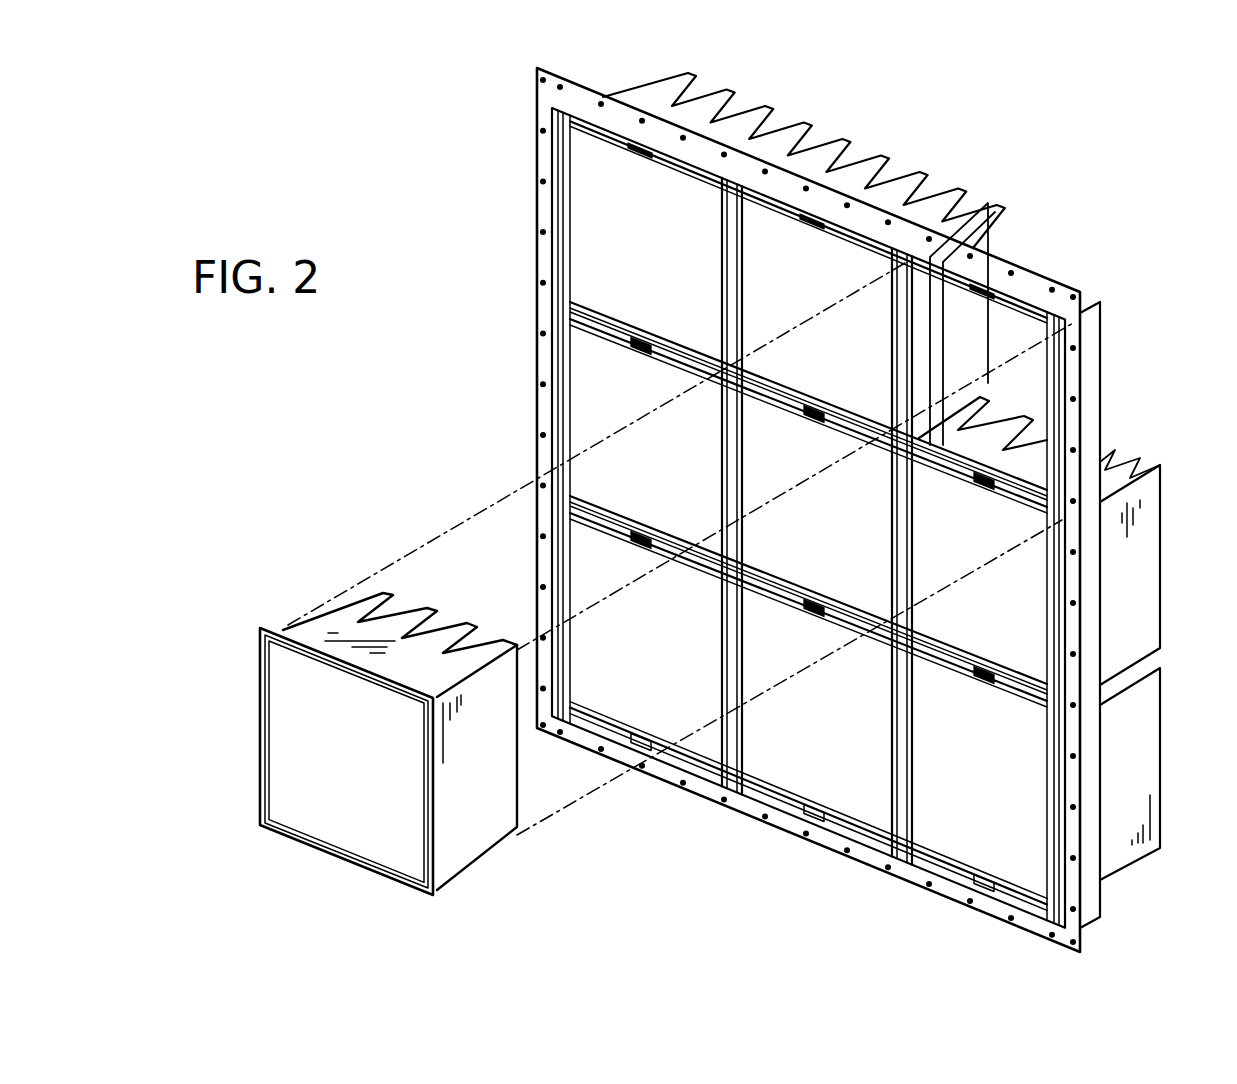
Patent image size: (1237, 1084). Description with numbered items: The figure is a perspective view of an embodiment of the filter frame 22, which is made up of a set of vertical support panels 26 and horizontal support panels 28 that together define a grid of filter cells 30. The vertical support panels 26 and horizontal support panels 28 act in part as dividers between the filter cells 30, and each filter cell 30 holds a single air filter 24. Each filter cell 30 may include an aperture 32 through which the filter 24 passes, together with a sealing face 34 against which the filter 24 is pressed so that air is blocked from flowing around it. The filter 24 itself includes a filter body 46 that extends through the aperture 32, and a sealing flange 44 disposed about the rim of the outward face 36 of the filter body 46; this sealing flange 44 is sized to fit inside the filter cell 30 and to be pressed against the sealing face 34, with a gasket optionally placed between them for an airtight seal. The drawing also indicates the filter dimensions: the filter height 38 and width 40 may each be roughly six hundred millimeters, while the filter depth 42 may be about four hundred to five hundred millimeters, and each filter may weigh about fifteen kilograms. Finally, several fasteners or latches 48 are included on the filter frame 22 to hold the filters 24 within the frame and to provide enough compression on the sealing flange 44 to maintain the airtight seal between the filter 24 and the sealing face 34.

The filter frame 22 is at (550, 89).
The air filter 24 is at (706, 691).
The vertical support panels 26 is at (923, 288).
The horizontal support panels 28 is at (1030, 483).
The filter cells 30 is at (812, 510).
The aperture 32 is at (1047, 360).
The sealing face 34 is at (957, 440).
The outward face 36 is at (356, 764).
The filter height 38 is at (1197, 745).
The filter width 40 is at (848, 115).
The filter depth 42 is at (517, 867).
The sealing flange 44 is at (258, 766).
The filter body 46 is at (497, 766).
The latches 48 is at (805, 616).